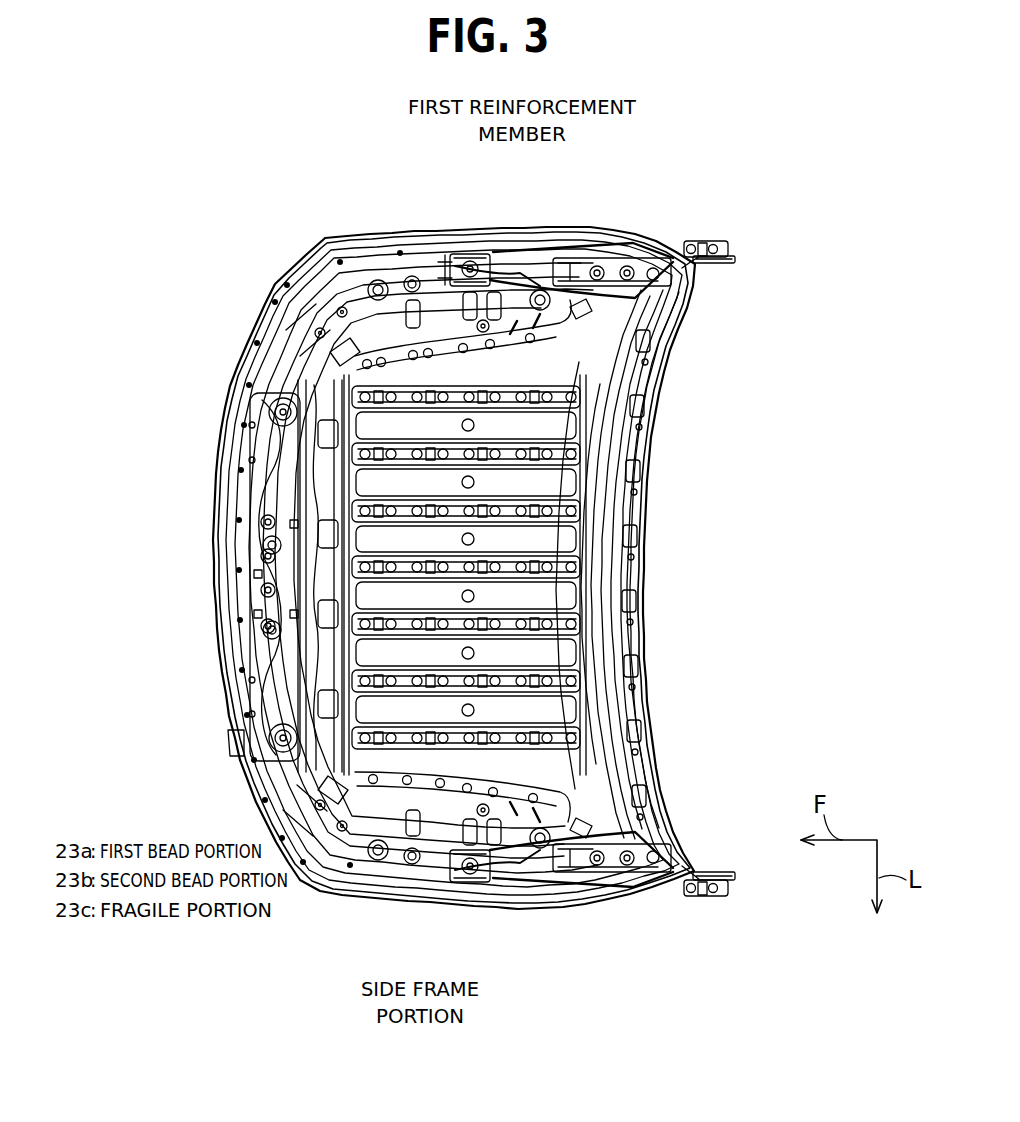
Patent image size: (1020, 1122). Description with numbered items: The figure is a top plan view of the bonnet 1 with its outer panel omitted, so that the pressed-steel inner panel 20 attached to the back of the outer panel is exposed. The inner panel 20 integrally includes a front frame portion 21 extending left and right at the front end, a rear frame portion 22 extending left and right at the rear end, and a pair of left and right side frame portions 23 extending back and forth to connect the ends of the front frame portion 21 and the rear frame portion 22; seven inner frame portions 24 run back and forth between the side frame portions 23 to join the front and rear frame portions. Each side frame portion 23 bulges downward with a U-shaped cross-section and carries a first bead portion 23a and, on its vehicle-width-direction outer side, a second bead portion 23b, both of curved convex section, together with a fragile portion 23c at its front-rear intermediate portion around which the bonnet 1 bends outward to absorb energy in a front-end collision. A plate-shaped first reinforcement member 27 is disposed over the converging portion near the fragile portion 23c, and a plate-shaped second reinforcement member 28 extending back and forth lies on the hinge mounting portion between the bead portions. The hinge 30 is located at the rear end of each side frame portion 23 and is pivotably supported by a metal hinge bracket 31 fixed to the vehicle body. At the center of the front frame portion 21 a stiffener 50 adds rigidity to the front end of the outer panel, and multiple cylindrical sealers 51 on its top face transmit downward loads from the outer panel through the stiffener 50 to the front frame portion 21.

The bonnet 1 is at (215, 226).
The bonnet inner panel 20 is at (230, 316).
The front frame portion 21 is at (237, 745).
The rear frame portion 22 is at (602, 619).
The side frame portion 23 is at (407, 262).
The first bead portion 23a is at (517, 275).
The second bead portion 23b is at (573, 243).
The fragile portion 23c is at (437, 275).
The inner frame portion 24 is at (520, 753).
The first reinforcement member 27 is at (468, 262).
The second reinforcement member 28 is at (630, 260).
The hinge 30 is at (707, 264).
The hinge bracket 31 is at (710, 241).
The stiffener 50 is at (245, 493).
The sealer 51 is at (455, 403).